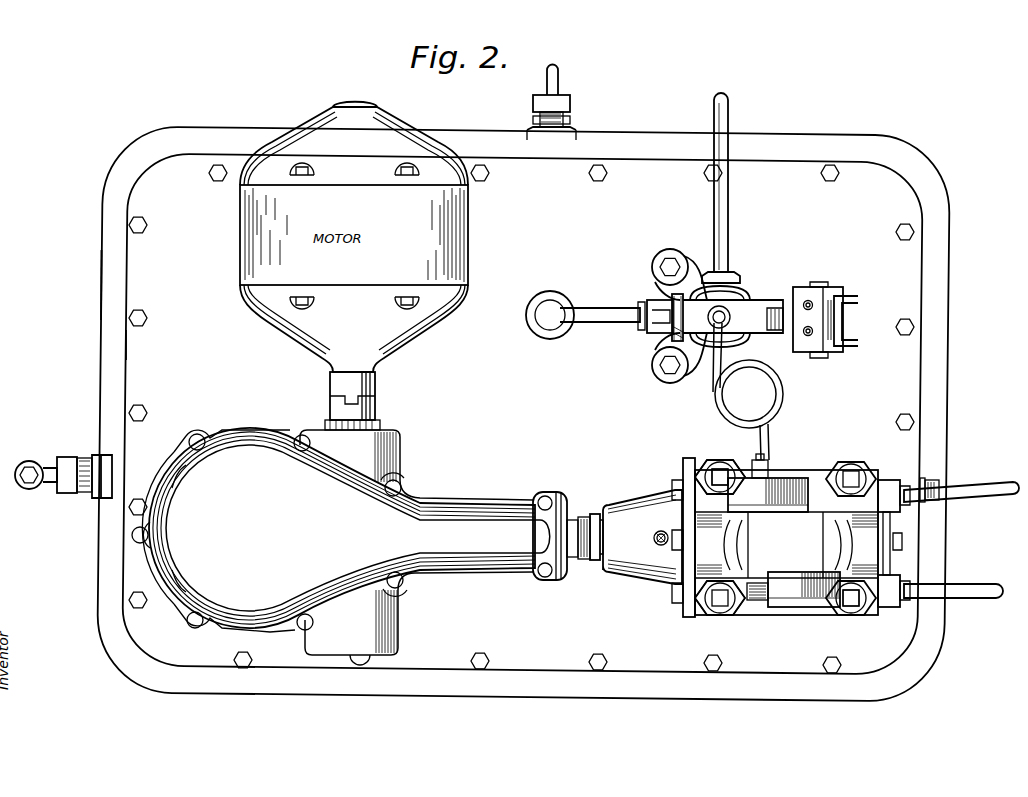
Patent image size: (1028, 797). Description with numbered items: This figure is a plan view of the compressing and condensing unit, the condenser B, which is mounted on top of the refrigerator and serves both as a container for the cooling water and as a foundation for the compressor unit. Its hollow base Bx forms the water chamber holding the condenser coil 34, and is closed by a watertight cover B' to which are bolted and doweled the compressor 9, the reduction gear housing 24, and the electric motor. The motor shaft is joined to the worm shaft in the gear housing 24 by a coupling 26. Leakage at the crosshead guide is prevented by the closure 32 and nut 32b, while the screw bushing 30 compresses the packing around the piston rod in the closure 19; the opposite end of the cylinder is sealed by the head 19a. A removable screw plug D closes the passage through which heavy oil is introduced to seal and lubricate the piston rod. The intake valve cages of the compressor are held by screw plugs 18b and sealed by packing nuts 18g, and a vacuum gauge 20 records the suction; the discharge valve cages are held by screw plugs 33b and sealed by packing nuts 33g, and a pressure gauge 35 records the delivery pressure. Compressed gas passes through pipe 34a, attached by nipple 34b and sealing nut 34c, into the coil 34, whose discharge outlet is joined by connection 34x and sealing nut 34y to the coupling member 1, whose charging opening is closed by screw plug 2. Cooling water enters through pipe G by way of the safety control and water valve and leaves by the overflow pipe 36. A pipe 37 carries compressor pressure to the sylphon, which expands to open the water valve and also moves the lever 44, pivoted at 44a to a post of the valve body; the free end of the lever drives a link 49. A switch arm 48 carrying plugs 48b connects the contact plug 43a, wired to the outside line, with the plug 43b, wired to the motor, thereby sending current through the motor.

The coupling member 1 is at (26, 461).
The screw plug 2 is at (28, 484).
The compressor 9 is at (852, 438).
The screw plug 18b is at (705, 608).
The packing nut 18g is at (835, 612).
The closure 19 is at (635, 511).
The head 19a is at (882, 558).
The vacuum gauge 20 is at (793, 589).
The reduction gear housing 24 is at (349, 546).
The coupling 26 is at (375, 395).
The screw bushing 30 is at (593, 515).
The closure 32 is at (584, 560).
The nut 32b is at (566, 575).
The screw plug 33b is at (705, 474).
The packing nut 33g is at (720, 476).
The condenser coil 34 is at (982, 594).
The pipe 34a is at (999, 489).
The nipple 34b is at (930, 478).
The sealing nut 34c is at (943, 478).
The connection 34x is at (83, 458).
The sealing nut 34y is at (67, 492).
The pressure gauge 35 is at (768, 483).
The overflow pipe 36 is at (558, 82).
The pipe 37 is at (721, 357).
The plug 43a is at (810, 302).
The plug 43b is at (807, 337).
The lever 44 is at (745, 311).
The pivot 44a is at (667, 340).
The switch arm 48 is at (848, 296).
The plugs 48b is at (833, 331).
The link 49 is at (760, 302).
The condenser B is at (523, 414).
The watertight cover B' is at (92, 285).
The base Bx is at (110, 348).
The screw plug D is at (652, 538).
The pipe G is at (603, 312).